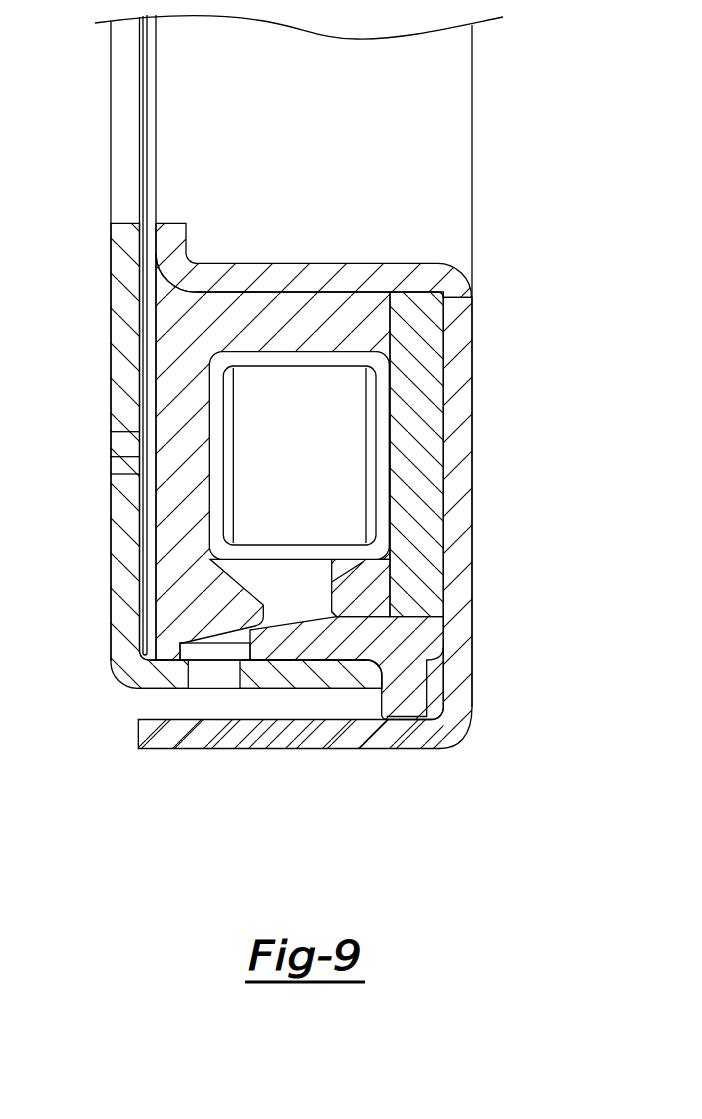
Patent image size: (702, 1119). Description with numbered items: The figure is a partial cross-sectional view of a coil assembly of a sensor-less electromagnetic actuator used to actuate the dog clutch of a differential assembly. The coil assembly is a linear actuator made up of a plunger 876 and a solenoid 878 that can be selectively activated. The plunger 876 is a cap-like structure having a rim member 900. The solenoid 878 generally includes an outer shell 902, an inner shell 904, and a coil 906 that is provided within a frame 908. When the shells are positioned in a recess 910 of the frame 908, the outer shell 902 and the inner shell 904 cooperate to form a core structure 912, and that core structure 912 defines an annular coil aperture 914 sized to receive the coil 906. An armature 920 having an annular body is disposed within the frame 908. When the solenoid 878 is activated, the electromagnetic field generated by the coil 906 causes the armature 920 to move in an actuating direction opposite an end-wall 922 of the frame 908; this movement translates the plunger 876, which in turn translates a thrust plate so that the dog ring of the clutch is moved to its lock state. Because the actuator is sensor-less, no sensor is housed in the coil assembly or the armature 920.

The plunger 876 is at (127, 365).
The solenoid 878 is at (448, 425).
The rim member 900 is at (272, 678).
The outer shell 902 is at (423, 556).
The inner shell 904 is at (172, 439).
The coil 906 is at (260, 503).
The frame 908 is at (457, 463).
The recess 910 is at (433, 302).
The core structure 912 is at (295, 317).
The annular coil aperture 914 is at (387, 357).
The armature 920 is at (403, 632).
The end-wall 922 is at (463, 663).